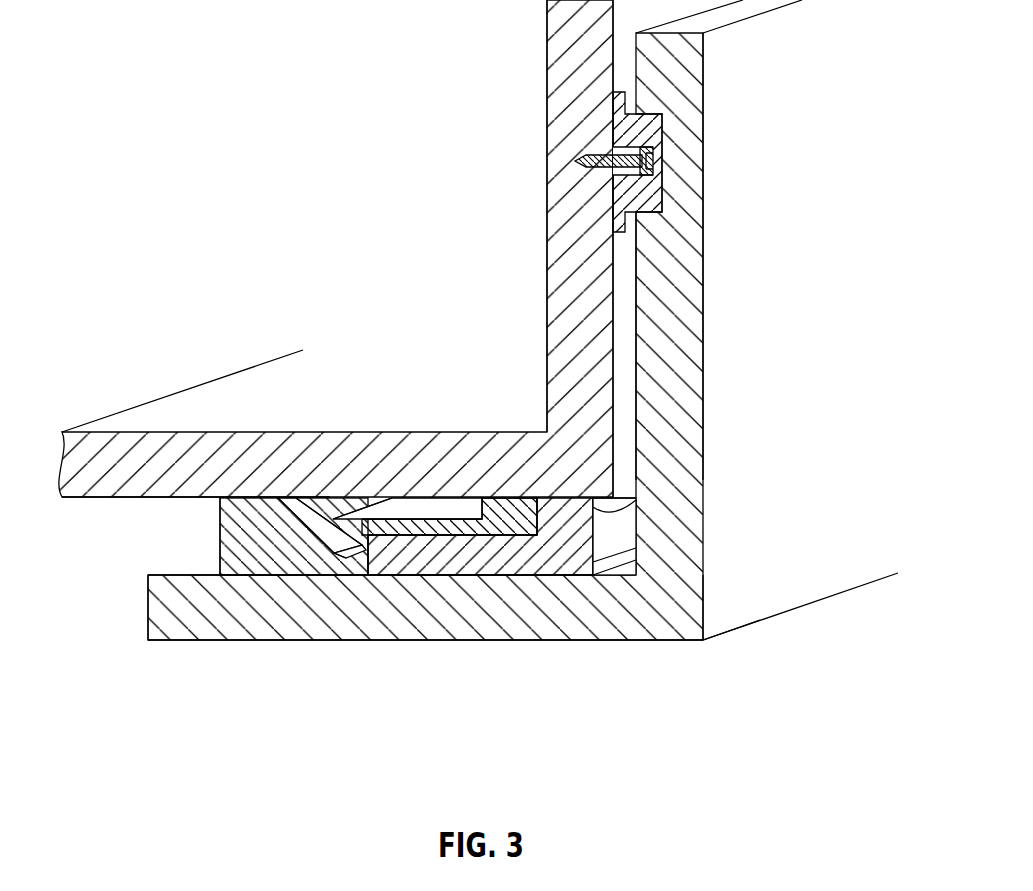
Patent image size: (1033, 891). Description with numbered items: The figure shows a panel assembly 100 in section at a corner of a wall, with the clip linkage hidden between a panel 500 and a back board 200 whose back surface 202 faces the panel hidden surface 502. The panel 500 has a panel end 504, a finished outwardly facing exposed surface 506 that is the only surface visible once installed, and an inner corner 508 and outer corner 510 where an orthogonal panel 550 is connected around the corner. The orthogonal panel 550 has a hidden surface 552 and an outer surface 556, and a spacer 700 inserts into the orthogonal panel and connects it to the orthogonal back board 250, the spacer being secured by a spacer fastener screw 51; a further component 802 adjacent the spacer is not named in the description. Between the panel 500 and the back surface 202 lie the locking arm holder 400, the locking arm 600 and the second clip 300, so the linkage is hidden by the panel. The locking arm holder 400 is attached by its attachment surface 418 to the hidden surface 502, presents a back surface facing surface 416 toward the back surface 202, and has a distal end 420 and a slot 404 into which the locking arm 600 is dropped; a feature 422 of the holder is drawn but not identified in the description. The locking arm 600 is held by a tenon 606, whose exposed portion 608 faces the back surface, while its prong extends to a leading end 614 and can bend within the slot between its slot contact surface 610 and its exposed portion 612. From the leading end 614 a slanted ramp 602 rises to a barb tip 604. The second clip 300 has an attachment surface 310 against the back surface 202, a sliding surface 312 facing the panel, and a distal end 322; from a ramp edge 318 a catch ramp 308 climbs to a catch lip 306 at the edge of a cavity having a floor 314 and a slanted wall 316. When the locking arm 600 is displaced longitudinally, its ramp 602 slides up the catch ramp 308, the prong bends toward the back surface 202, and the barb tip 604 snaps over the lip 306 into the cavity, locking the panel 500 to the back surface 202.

The panel assembly 100 is at (254, 161).
The back board 200 is at (118, 453).
The back surface 202 is at (105, 500).
The orthogonal back board 250 is at (557, 137).
The second clip 300 is at (337, 563).
The second clip catch lip 306 is at (380, 550).
The second clip catch ramp 308 is at (440, 548).
The second clip attachment surface 310 is at (220, 503).
The second clip sliding surface 312 is at (288, 578).
The second clip catch cavity floor 314 is at (398, 546).
The second clip cavity slanted wall 316 is at (335, 520).
The second clip catch ramp edge 318 is at (385, 548).
The second clip distal end 322 is at (222, 530).
The locking arm holder 400 is at (510, 550).
The locking arm holder slot 404 is at (445, 552).
The locking arm holder back surface facing surface 416 is at (636, 500).
The locking arm holder attachment surface 418 is at (542, 555).
The locking arm holder distal end 420 is at (593, 562).
The base block end 422 is at (385, 555).
The panel 500 is at (175, 630).
The panel hidden surface 502 is at (148, 578).
The panel end 504 is at (148, 607).
The panel exposed surface 506 is at (212, 640).
The panel inner corner 508 is at (673, 640).
The panel outer corner 510 is at (703, 640).
The orthogonal panel 550 is at (678, 335).
The orthogonal panel hidden surface 552 is at (637, 303).
The orthogonal panel outer surface 556 is at (703, 237).
The locking arm 600 is at (390, 519).
The locking arm ramp 602 is at (358, 519).
The locking arm barb tip 604 is at (377, 519).
The locking arm tenon 606 is at (508, 498).
The locking arm tenon exposed portion 608 is at (513, 519).
The locking arm slot contact surface 610 is at (453, 519).
The locking arm prong exposed portion 612 is at (437, 519).
The locking arm leading end 614 is at (298, 520).
The spacer 700 is at (630, 128).
The fastener head 802 is at (668, 180).
The spacer fastener screw 51 is at (578, 162).